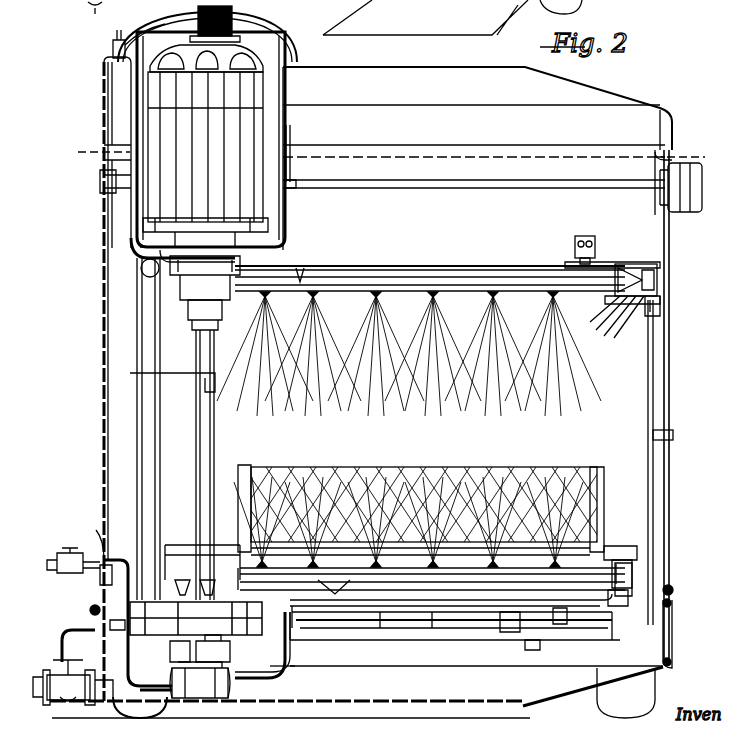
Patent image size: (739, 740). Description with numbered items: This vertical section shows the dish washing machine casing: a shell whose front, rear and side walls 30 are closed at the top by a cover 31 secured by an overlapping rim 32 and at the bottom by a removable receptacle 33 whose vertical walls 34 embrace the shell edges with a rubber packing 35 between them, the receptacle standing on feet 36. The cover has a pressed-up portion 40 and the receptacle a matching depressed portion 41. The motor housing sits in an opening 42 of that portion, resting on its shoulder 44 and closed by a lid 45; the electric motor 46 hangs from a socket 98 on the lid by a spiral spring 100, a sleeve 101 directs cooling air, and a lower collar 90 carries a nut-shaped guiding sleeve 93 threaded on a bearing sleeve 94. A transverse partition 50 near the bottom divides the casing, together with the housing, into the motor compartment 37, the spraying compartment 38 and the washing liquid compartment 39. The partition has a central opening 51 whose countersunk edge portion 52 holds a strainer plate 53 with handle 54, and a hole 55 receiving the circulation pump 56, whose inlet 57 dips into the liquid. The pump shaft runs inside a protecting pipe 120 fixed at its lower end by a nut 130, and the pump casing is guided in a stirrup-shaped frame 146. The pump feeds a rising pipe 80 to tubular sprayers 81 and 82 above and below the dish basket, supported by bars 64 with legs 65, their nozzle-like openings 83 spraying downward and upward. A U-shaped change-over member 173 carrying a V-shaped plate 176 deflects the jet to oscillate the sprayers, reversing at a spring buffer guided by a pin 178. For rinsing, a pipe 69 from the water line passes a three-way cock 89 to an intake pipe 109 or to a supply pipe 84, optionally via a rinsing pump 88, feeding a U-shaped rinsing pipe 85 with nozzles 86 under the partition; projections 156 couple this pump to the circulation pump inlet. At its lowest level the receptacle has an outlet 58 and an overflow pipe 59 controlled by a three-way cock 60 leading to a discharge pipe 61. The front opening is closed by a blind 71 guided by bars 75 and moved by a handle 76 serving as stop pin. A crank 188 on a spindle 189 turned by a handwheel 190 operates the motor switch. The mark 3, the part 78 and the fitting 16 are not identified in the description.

The front, rear and side walls 30 is at (106, 312).
The cover 31 is at (668, 126).
The rim 32 is at (652, 160).
The receptacle 33 is at (575, 692).
The vertical walls of receptacle 34 is at (664, 648).
The packing 35 is at (670, 604).
The feet 36 is at (598, 710).
The motor compartment 37 is at (205, 54).
The spraying compartment 38 is at (423, 482).
The washing liquid compartment 39 is at (476, 655).
The pressed-up portion 40 is at (355, 66).
The depressed portion 41 is at (386, 700).
The opening 42 is at (117, 152).
The shoulder 44 is at (112, 46).
The lid 45 is at (140, 24).
The electric motor 46 is at (150, 190).
The transverse partition 50 is at (580, 618).
The central opening 51 is at (382, 630).
The countersunk edge portion 52 is at (505, 640).
The strainer plate 53 is at (434, 630).
The handle 54 is at (558, 622).
The hole 55 is at (268, 610).
The pump 56 is at (290, 658).
The inlet 57 is at (170, 650).
The outlet 58 is at (108, 706).
The overflow pipe 59 is at (68, 628).
The three-way cock 60 is at (68, 705).
The discharge pipe 61 is at (47, 670).
The bars 64 is at (618, 548).
The legs 65 is at (634, 568).
The pipe 69 is at (52, 556).
The blind 71 is at (648, 364).
The guiding bars 75 is at (648, 316).
The handle 76 is at (653, 432).
The lid 78 is at (513, 12).
The rising pipe 80 is at (158, 438).
The tubular sprayer 81 is at (440, 269).
The tubular sprayer 82 is at (432, 594).
The nozzle-like openings 83 is at (425, 296).
The supply pipe 84 is at (110, 588).
The rinsing pipe 85 is at (300, 630).
The nozzles 86 is at (512, 602).
The pump 88 is at (205, 700).
The three-way cock 89 is at (70, 574).
The collar 90 is at (226, 298).
The guiding sleeve 93 is at (282, 248).
The bearing sleeve 94 is at (220, 322).
The socket 98 is at (234, 14).
The spring 100 is at (175, 18).
The sleeve 101 is at (278, 50).
The intake pipe 109 is at (107, 522).
The pipe 120 is at (212, 438).
The nut 130 is at (185, 570).
The stirrup-shaped frame 146 is at (232, 650).
The projections 156 is at (194, 700).
The change-over member 173 is at (625, 262).
The V-shaped plate 176 is at (658, 272).
The pin 178 is at (597, 254).
The crank 188 is at (292, 132).
The spindle 189 is at (526, 190).
The handwheel 190 is at (690, 214).
The section line 3- 3 is at (391, 146).
The drain fitting 16 is at (618, 608).